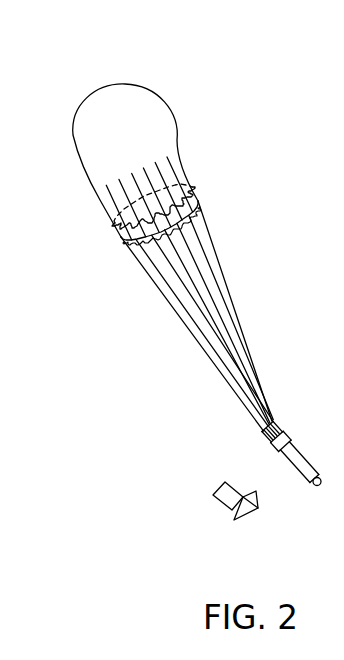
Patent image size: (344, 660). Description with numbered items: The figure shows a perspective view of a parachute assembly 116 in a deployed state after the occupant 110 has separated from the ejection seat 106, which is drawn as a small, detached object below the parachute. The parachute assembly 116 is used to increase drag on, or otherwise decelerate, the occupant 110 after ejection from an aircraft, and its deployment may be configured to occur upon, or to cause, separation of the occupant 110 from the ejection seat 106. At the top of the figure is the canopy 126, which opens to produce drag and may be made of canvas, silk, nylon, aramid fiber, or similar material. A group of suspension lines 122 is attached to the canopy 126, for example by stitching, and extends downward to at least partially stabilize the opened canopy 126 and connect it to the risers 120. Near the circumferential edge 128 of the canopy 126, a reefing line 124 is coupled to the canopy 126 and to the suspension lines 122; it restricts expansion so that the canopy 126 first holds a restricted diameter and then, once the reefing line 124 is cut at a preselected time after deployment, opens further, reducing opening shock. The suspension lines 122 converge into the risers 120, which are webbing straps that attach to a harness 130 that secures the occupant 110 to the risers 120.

The ejection seat 106 is at (228, 502).
The occupant 110 is at (255, 441).
The parachute assembly 116 is at (96, 78).
The risers 120 is at (265, 404).
The suspension lines 122 is at (218, 257).
The reefing line 124 is at (137, 242).
The canopy 126 is at (133, 134).
The circumferential edge 128 is at (181, 197).
The harness 130 is at (281, 441).